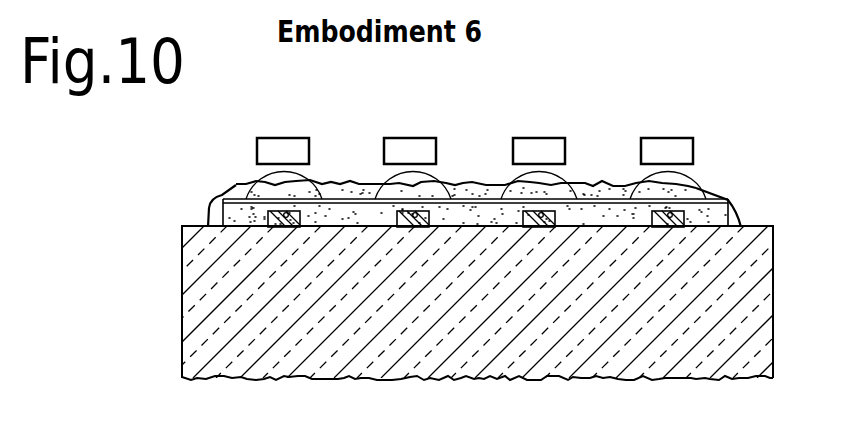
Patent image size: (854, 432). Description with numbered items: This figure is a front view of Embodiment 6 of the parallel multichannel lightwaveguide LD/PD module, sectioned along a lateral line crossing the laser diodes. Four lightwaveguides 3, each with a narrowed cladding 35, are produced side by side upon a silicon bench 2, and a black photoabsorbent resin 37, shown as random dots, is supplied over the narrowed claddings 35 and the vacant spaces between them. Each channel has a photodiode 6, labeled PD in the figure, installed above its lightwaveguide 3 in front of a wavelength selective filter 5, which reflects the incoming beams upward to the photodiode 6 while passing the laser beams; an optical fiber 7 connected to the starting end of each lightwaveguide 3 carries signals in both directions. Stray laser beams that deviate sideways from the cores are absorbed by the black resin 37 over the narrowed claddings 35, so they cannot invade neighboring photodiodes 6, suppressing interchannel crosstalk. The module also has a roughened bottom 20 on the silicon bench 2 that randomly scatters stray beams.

The silicon bench 2 is at (483, 333).
The bottom surface of substrate 20 is at (602, 380).
The black resin 37 is at (207, 213).
The wavelength selective filter 5 is at (729, 200).
The lightwaveguide 3 is at (209, 203).
The narrowed cladding 35 is at (287, 215).
The optical fiber 7 is at (278, 181).
The photodiode 6 is at (307, 138).